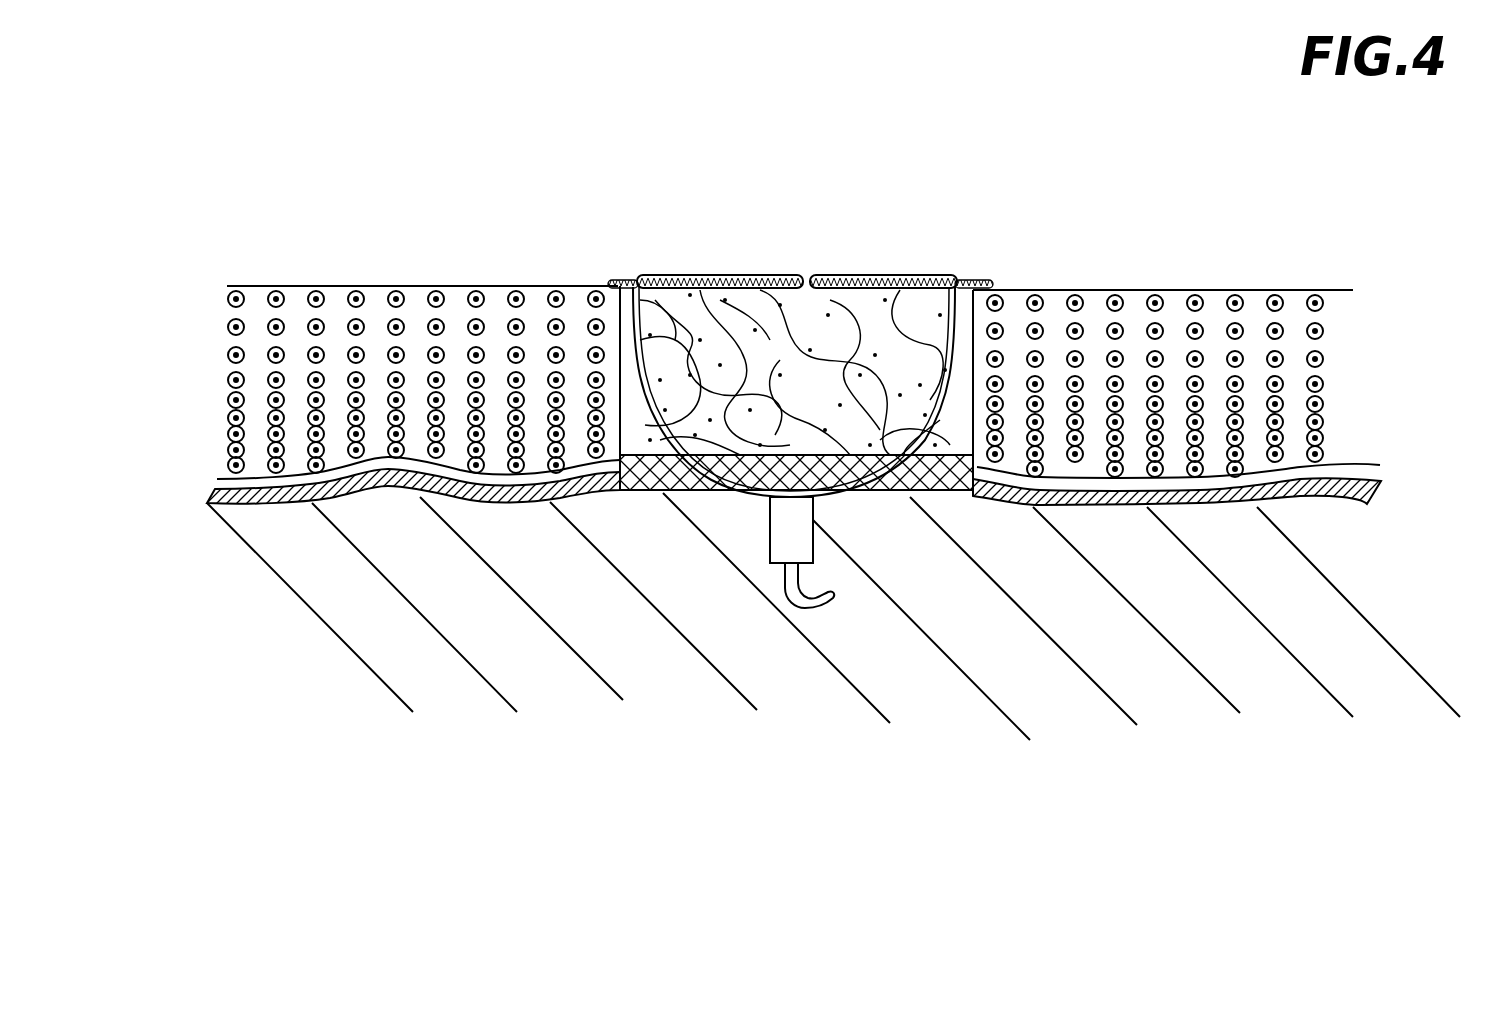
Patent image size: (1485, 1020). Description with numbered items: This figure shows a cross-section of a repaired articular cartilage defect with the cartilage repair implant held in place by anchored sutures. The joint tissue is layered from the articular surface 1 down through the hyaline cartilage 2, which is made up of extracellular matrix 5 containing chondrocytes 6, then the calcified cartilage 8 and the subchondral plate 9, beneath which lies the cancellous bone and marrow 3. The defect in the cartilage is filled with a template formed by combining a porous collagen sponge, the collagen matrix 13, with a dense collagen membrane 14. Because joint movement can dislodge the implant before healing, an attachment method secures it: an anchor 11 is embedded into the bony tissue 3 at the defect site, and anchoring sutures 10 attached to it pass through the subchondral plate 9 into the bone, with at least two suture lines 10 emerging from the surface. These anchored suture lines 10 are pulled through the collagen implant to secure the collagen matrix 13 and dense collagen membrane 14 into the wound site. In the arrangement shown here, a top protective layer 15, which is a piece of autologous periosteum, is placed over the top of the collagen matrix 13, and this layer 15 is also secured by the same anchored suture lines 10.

The articular surface 1 is at (352, 285).
The hyaline cartilage 2 is at (212, 285).
The cancellous bone and marrow 3 is at (200, 503).
The extracellular matrix 5 is at (1020, 307).
The chondrocytes 6 is at (1325, 303).
The calcified cartilage 8 is at (1390, 450).
The subchondral plate 9 is at (1383, 490).
The anchoring sutures 10 is at (868, 277).
The anchor 11 is at (786, 600).
The collagen matrix 13 is at (843, 405).
The dense collagen membrane 14 is at (633, 497).
The top protective layer 15 is at (622, 285).